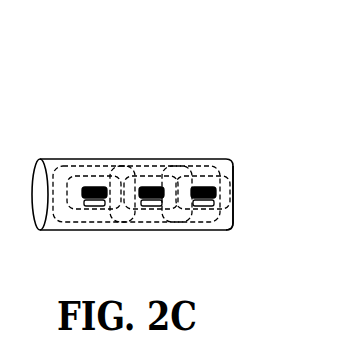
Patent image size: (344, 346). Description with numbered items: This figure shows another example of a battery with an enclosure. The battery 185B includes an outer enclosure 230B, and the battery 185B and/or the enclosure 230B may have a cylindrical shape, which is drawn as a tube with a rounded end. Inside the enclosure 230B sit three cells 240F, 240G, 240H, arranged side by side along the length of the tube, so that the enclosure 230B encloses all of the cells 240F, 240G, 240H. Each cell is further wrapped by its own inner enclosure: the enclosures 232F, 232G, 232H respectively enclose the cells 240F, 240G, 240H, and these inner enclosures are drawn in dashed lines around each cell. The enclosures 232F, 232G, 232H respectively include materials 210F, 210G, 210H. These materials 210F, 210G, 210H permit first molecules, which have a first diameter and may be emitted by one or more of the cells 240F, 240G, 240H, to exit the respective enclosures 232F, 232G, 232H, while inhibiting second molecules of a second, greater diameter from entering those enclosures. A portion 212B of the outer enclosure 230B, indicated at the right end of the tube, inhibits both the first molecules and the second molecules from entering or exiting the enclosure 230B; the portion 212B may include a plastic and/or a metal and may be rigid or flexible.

The battery 185B is at (134, 88).
The enclosure 230B is at (163, 159).
The portion of enclosure 212B is at (233, 222).
The cell 240F is at (94, 173).
The cell 240G is at (140, 173).
The cell 240H is at (196, 173).
The enclosure 232F is at (97, 198).
The enclosure 232G is at (150, 198).
The enclosure 232H is at (204, 198).
The material 210F is at (89, 207).
The material 210G is at (156, 200).
The material 210H is at (214, 203).